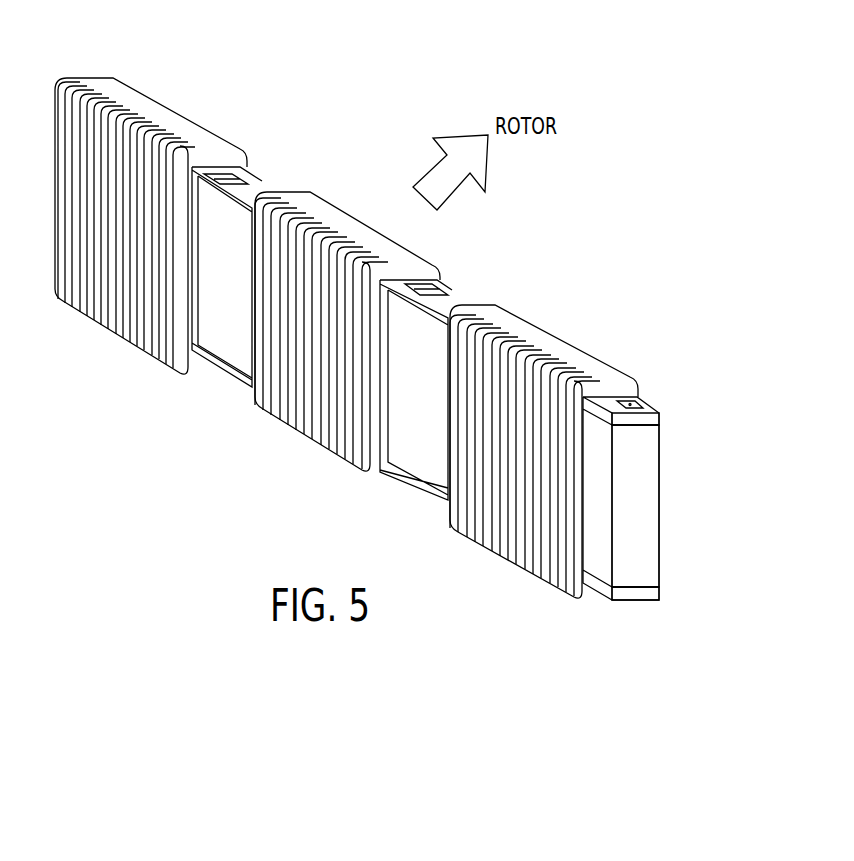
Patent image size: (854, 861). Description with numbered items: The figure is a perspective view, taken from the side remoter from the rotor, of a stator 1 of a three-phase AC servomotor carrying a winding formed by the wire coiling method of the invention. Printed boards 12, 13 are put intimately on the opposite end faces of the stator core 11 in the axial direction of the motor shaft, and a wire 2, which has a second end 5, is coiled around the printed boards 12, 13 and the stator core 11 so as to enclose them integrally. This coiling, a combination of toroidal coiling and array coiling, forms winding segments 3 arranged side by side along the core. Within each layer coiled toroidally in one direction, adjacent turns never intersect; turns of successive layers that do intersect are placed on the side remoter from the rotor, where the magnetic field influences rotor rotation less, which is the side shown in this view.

The stator 1 is at (415, 108).
The wire 2 is at (378, 472).
The winding segment 3 is at (553, 342).
The second end 5 is at (647, 400).
The stator core 11 is at (653, 497).
The printed board 12 is at (657, 417).
The printed board 13 is at (653, 595).